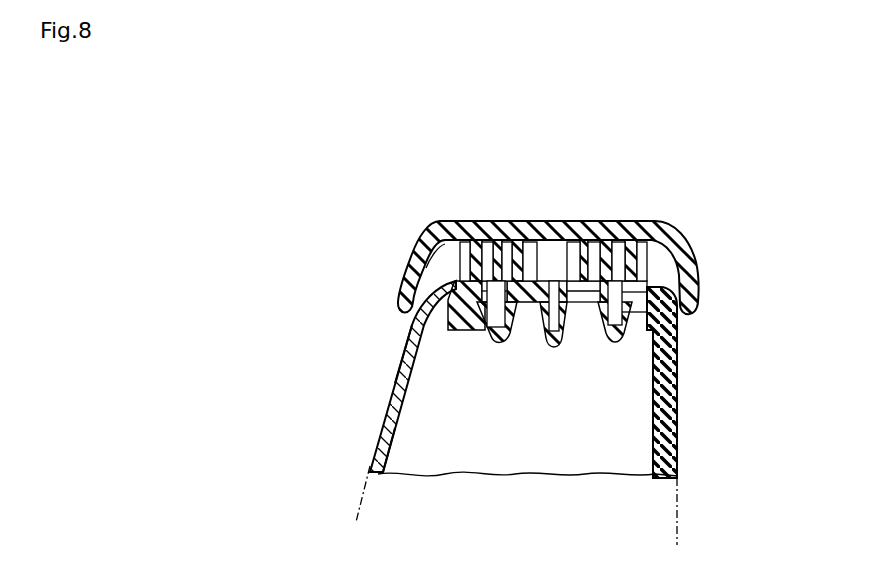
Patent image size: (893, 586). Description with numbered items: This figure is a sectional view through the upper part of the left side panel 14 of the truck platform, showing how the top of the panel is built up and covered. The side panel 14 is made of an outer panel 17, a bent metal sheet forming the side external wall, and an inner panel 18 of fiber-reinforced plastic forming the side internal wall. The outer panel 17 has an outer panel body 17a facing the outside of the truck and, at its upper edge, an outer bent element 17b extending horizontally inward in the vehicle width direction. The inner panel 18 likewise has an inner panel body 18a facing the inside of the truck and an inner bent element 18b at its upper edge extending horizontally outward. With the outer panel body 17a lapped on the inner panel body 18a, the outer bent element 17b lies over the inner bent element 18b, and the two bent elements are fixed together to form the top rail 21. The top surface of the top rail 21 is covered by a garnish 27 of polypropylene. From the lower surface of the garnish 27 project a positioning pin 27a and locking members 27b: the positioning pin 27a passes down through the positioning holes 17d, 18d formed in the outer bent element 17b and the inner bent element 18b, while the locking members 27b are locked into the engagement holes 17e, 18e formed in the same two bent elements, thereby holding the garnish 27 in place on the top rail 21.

The side panel 14 is at (392, 383).
The outer panel 17 is at (380, 413).
The outer panel body 17a is at (375, 438).
The outer bent element 17b is at (527, 300).
The positioning hole 17d is at (558, 300).
The engagement hole 17e is at (610, 300).
The inner panel 18 is at (680, 408).
The inner panel body 18a is at (677, 433).
The inner bent element 18b is at (532, 328).
The positioning hole 18d is at (552, 340).
The engagement hole 18e is at (606, 338).
The top rail 21 is at (452, 273).
The garnish 27 is at (700, 289).
The positioning pin 27a is at (553, 322).
The locking member 27b is at (492, 327).